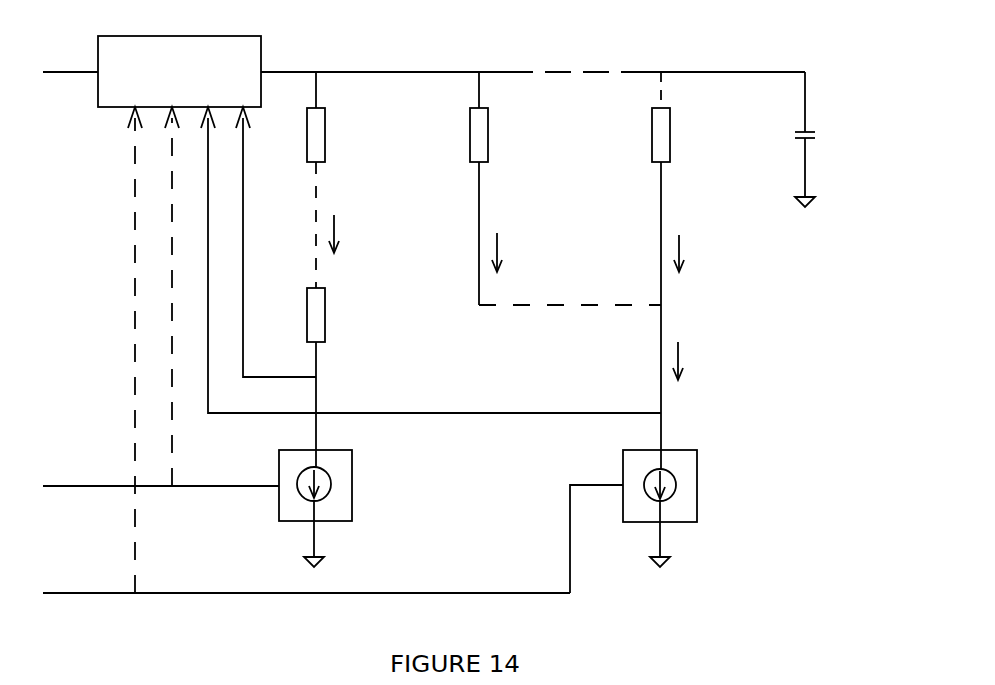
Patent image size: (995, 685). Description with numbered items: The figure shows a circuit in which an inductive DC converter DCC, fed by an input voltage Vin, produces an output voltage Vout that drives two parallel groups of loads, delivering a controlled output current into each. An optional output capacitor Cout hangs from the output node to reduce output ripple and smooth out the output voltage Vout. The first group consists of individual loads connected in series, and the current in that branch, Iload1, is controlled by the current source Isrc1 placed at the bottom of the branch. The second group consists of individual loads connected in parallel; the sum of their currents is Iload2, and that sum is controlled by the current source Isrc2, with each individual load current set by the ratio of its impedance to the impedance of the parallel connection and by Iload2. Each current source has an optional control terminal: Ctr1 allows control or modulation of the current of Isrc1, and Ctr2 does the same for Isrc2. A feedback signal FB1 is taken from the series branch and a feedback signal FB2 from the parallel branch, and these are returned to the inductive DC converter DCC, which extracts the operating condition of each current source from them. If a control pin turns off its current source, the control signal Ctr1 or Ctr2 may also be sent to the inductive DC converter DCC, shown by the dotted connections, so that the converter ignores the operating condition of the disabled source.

The inductive DC converter DCC is at (170, 84).
The input voltage Vin is at (70, 61).
The output voltage Vout is at (533, 61).
The control terminal Ctr1 is at (161, 296).
The control terminal Ctr2 is at (333, 350).
The feedback signal FB1 is at (276, 242).
The feedback signal FB2 is at (431, 261).
The load current Iload1 is at (362, 230).
The load current Iload2 is at (706, 358).
The output capacitor Cout is at (830, 139).
The current source Isrc1 is at (326, 508).
The current source Isrc2 is at (672, 508).